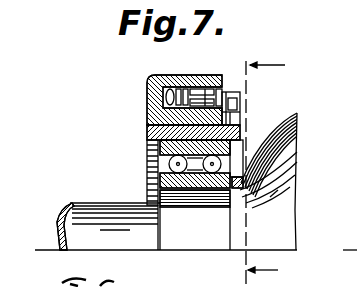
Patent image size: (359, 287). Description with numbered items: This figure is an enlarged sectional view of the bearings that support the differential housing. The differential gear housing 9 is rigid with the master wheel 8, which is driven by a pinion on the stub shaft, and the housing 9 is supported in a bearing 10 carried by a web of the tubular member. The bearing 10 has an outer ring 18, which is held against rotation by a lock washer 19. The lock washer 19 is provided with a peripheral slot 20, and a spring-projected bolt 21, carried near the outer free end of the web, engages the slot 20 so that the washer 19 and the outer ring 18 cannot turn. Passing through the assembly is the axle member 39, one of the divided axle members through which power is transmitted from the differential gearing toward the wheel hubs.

The master wheel 8 is at (262, 164).
The differential gear housing 9 is at (298, 138).
The bearing 10 is at (160, 152).
The outer ring 18 is at (147, 132).
The lock washer 19 is at (243, 118).
The peripheral slot 20 is at (234, 97).
The spring-projected bolt 21 is at (216, 98).
The axle member 39 is at (104, 204).